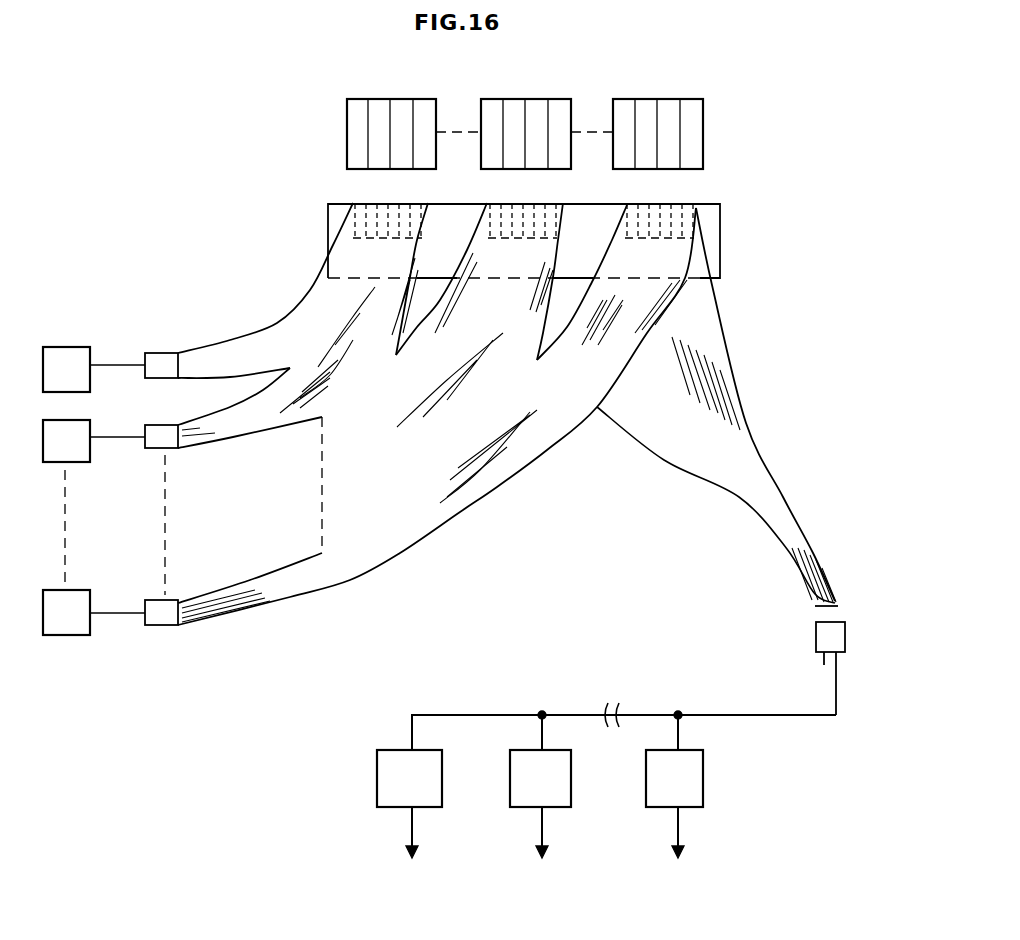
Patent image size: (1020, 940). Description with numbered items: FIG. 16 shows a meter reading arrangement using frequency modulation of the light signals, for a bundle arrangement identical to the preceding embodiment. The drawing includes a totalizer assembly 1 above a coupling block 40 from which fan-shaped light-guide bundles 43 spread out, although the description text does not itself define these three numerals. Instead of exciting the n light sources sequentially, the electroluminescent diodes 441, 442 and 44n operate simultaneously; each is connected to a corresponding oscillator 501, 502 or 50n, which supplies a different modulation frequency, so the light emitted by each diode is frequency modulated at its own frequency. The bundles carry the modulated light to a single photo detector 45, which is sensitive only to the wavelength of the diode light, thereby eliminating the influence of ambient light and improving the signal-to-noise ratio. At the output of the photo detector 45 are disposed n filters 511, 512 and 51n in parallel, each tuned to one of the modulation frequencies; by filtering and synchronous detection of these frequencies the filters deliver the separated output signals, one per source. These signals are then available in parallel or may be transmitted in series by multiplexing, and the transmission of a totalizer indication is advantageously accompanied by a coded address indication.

The array of light sources 1 is at (746, 137).
The coupling block 40 is at (710, 237).
The light guide sheet 43 is at (683, 440).
The electroluminescent diode 441 is at (158, 362).
The electroluminescent diode 442 is at (172, 442).
The electroluminescent diode 44n is at (163, 622).
The photo detector 45 is at (816, 639).
The oscillator 501 is at (60, 355).
The oscillator 502 is at (72, 453).
The oscillator 50n is at (70, 637).
The filter 511 is at (430, 768).
The filter 512 is at (560, 768).
The filter 51n is at (698, 768).